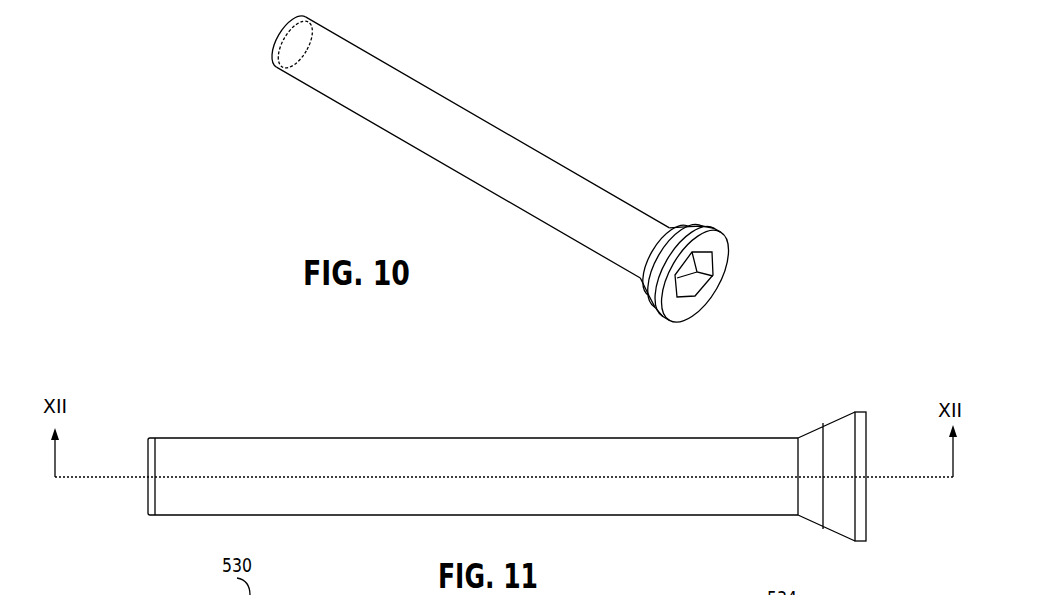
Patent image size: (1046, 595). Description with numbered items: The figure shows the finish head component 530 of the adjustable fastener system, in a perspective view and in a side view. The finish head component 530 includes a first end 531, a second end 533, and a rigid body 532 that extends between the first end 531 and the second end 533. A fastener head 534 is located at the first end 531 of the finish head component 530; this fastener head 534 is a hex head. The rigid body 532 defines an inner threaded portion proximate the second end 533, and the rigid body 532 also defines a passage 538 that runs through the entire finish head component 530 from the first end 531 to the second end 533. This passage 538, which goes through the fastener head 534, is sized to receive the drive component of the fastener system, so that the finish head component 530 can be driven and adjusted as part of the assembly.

In FIG. 10, the finish head component 530 is at (356, 164).
In FIG. 11, the finish head component 530 is at (264, 408).
In FIG. 10, the first end 531 is at (722, 300).
In FIG. 11, the first end 531 is at (858, 510).
In FIG. 10, the rigid body 532 is at (525, 144).
In FIG. 11, the rigid body 532 is at (415, 440).
In FIG. 10, the second end 533 is at (276, 58).
In FIG. 11, the second end 533 is at (150, 495).
In FIG. 10, the fastener head 534 is at (722, 240).
In FIG. 11, the fastener head 534 is at (840, 422).
In FIG. 10, the passage 538 is at (690, 283).